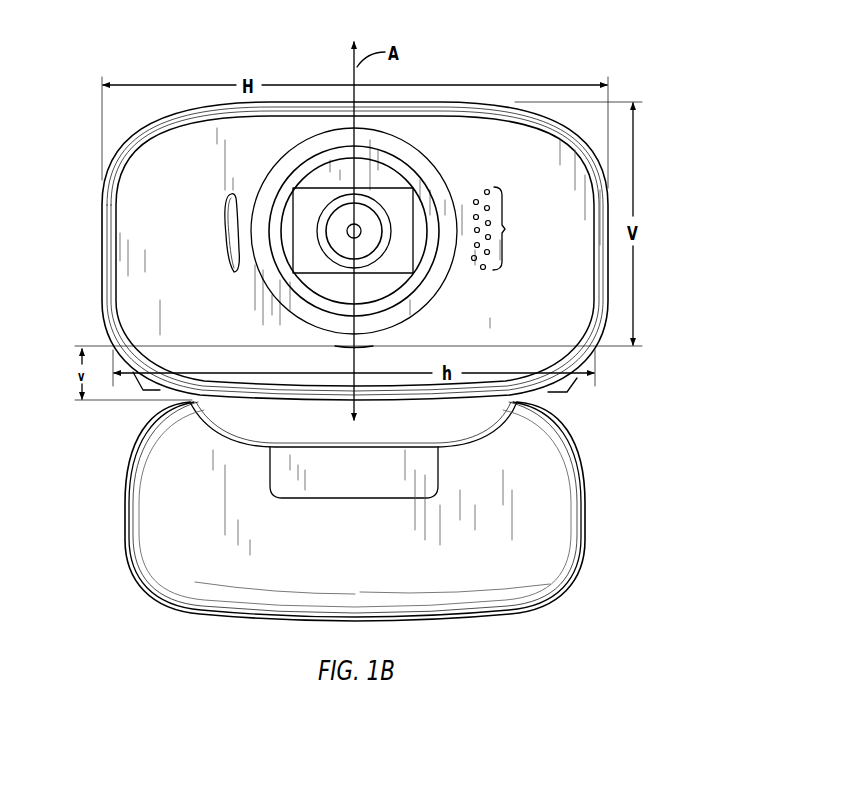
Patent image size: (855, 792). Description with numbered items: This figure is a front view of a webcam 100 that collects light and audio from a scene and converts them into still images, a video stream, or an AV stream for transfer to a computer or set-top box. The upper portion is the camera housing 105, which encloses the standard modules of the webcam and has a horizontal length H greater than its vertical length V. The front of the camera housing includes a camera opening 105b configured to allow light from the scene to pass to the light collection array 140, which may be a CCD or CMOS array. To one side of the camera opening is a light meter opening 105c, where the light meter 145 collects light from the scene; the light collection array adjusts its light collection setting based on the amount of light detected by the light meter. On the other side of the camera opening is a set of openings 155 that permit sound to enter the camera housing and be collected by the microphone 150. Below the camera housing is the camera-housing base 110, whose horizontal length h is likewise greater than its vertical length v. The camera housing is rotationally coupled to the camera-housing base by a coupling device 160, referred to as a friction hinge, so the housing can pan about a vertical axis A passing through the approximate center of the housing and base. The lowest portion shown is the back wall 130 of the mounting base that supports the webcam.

The webcam 100 is at (646, 551).
The camera housing 105 is at (103, 212).
The camera opening 105b is at (323, 247).
The light meter opening 105c is at (226, 200).
The camera-housing base 110 is at (578, 384).
The back wall 130 is at (585, 512).
The light collection array 140 is at (362, 232).
The light meter 145 is at (225, 229).
The microphone 150 is at (486, 266).
The set of openings 155 is at (514, 228).
The coupling device 160 is at (345, 344).